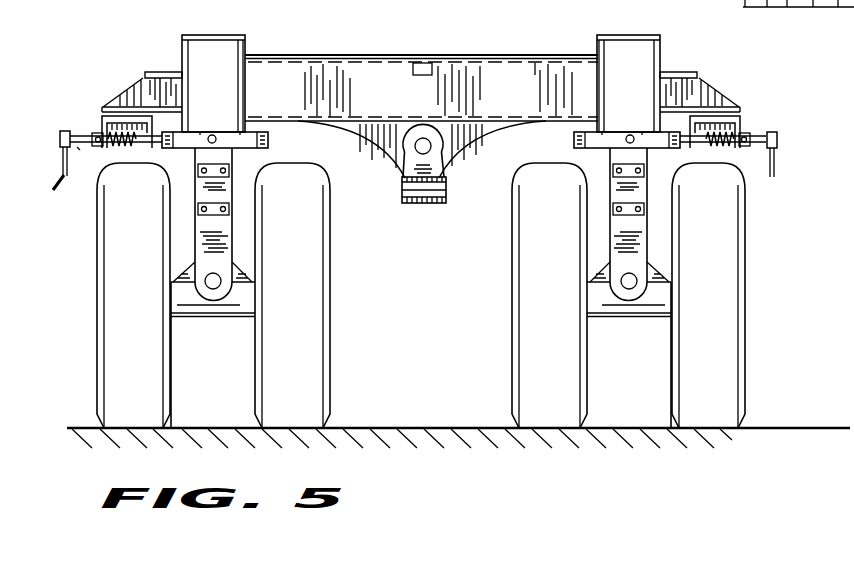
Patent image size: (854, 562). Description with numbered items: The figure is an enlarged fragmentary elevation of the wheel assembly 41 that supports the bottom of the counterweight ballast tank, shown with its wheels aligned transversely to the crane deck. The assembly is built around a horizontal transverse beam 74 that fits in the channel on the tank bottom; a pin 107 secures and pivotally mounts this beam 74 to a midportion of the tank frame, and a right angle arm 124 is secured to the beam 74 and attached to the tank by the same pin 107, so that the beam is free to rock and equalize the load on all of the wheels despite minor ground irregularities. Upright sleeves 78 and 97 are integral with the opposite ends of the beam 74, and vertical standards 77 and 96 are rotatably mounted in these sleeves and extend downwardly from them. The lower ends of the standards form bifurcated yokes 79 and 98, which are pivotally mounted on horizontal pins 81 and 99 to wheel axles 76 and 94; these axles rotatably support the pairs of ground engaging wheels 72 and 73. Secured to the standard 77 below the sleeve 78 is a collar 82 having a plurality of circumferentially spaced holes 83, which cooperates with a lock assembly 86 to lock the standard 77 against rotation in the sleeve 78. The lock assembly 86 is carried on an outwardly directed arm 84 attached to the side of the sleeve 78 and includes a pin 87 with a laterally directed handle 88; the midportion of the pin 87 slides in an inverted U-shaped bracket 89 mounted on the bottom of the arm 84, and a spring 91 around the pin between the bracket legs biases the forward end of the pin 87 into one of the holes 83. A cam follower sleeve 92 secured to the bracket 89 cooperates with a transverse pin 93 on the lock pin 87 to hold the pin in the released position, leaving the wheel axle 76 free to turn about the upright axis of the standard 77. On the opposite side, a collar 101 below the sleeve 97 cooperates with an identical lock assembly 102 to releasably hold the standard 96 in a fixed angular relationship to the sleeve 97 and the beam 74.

The wheel assembly 41 is at (112, 78).
The ground engaging wheels 72 is at (280, 385).
The ground engaging wheels 73 is at (695, 396).
The horizontal transverse beam 74 is at (372, 68).
The wheel axle 76 is at (200, 318).
The vertical standard 77 is at (260, 165).
The upright sleeve 78 is at (232, 54).
The bifurcated yoke 79 is at (232, 249).
The horizontal pin 81 is at (212, 283).
The collar 82 is at (255, 130).
The holes 83 is at (213, 135).
The outwardly directed arm 84 is at (113, 100).
The lock assembly 86 is at (56, 190).
The pin 87 is at (79, 150).
The handle 88 is at (63, 155).
The inverted U-shaped bracket 89 is at (104, 122).
The spring 91 is at (130, 143).
The cam follower sleeve 92 is at (95, 150).
The transverse pin 93 is at (78, 134).
The wheel axle 94 is at (603, 318).
The vertical standard 96 is at (620, 191).
The upright sleeve 97 is at (635, 70).
The bifurcated yoke 98 is at (613, 290).
The horizontal pin 99 is at (632, 291).
The collar 101 is at (574, 140).
The lock assembly 102 is at (762, 121).
The pin 107 is at (418, 152).
The right angle arm 124 is at (446, 202).